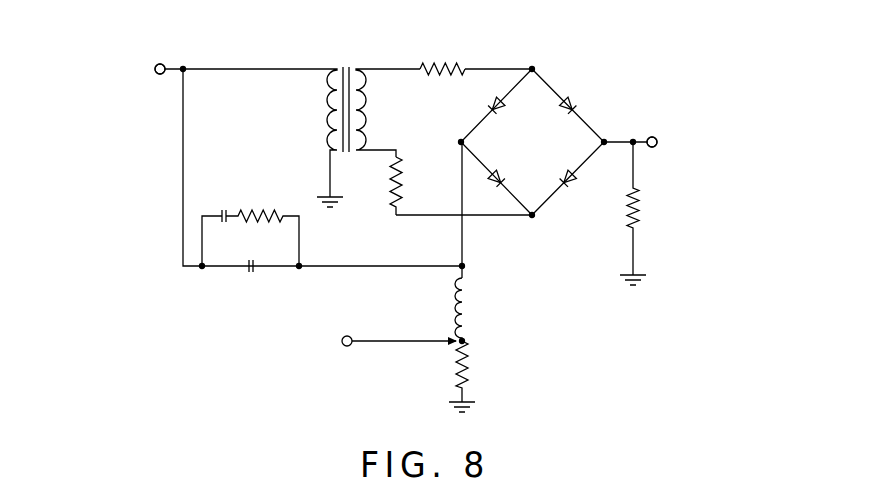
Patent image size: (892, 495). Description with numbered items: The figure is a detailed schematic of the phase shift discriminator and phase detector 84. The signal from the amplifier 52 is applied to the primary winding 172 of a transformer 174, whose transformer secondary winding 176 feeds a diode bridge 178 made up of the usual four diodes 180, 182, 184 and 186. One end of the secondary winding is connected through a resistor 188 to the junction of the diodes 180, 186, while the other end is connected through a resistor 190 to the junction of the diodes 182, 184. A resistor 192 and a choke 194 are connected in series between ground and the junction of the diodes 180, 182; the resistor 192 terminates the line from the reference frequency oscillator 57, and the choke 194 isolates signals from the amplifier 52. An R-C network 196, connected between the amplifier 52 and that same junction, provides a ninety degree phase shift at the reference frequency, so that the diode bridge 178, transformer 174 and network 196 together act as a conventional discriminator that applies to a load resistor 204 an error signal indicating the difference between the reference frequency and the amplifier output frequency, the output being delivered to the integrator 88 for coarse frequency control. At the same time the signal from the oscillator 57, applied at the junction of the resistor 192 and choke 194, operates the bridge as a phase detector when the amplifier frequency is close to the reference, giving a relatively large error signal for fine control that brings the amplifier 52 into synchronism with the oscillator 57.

The amplifier 52 is at (95, 80).
The reference frequency oscillator 57 is at (338, 348).
The phase shift discriminator and phase detector 84 is at (533, 109).
The integrator 88 is at (737, 140).
The primary winding 172 is at (325, 96).
The transformer 174 is at (338, 66).
The transformer secondary winding 176 is at (366, 112).
The diode bridge 178 is at (535, 56).
The diode 180 is at (484, 107).
The diode 182 is at (488, 171).
The diode 184 is at (563, 171).
The diode 186 is at (566, 97).
The resistor 188 is at (441, 62).
The resistor 190 is at (399, 184).
The resistor 192 is at (467, 362).
The choke 194 is at (467, 300).
The R-C network 196 is at (247, 190).
The load resistor 204 is at (640, 219).